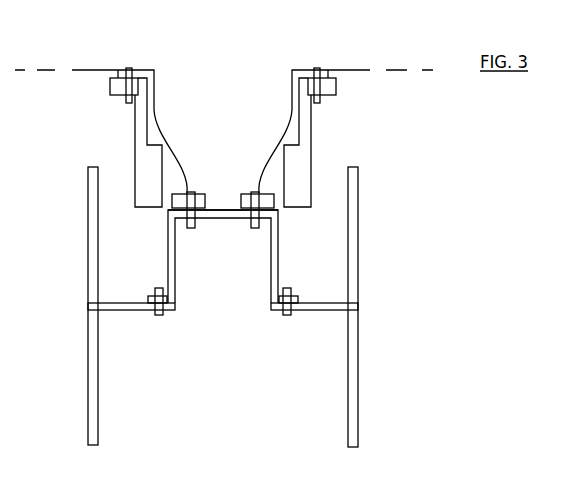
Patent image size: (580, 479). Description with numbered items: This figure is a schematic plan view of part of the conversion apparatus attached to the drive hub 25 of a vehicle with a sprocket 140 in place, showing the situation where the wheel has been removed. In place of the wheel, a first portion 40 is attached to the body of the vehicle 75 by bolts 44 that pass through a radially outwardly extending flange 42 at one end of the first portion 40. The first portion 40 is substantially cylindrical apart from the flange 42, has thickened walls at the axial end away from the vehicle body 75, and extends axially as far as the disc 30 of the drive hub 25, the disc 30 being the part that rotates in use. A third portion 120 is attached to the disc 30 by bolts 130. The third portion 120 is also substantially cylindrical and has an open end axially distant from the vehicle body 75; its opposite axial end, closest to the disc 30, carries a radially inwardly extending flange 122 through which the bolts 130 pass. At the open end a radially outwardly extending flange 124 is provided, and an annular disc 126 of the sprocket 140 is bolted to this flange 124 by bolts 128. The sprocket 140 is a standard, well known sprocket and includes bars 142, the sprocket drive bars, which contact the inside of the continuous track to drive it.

The drive hub 25 is at (231, 130).
The disc 30 is at (247, 198).
The first portion 40 is at (143, 160).
The radially outwardly extending flange 42 is at (113, 87).
The bolts 44 is at (128, 68).
The body of the vehicle 75 is at (346, 69).
The third portion 120 is at (273, 255).
The radially inwardly extending flange 122 is at (278, 214).
The radially outwardly extending flange 124 is at (293, 297).
The annular disc 126 is at (125, 309).
The bolts 128 is at (157, 289).
The bolts 130 is at (257, 214).
The sprocket 140 is at (380, 268).
The sprocket drive bars 142 is at (353, 215).